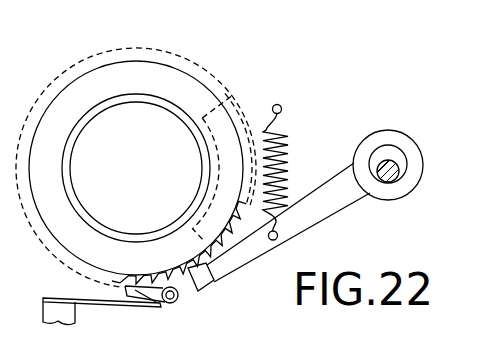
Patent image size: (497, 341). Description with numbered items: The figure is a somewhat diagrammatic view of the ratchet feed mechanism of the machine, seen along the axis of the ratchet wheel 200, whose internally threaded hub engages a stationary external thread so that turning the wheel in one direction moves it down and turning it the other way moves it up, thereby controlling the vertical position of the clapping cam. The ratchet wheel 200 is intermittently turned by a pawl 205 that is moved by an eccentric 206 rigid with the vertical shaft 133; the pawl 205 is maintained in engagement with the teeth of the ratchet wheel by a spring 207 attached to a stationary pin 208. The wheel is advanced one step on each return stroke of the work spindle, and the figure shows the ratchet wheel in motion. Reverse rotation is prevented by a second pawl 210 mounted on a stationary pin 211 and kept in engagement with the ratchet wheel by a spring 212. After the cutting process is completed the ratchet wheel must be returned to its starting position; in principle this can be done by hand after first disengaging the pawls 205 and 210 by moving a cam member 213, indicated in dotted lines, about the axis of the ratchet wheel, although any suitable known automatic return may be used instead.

The ratchet wheel 200 is at (230, 226).
The cam member 213 is at (212, 162).
The pawl 205 is at (202, 274).
The eccentric 206 is at (387, 152).
The vertical shaft 133 is at (397, 177).
The spring 207 is at (277, 145).
The stationary pin 208 is at (282, 108).
The pawl 210 is at (138, 302).
The stationary pin 211 is at (178, 300).
The spring 212 is at (107, 302).